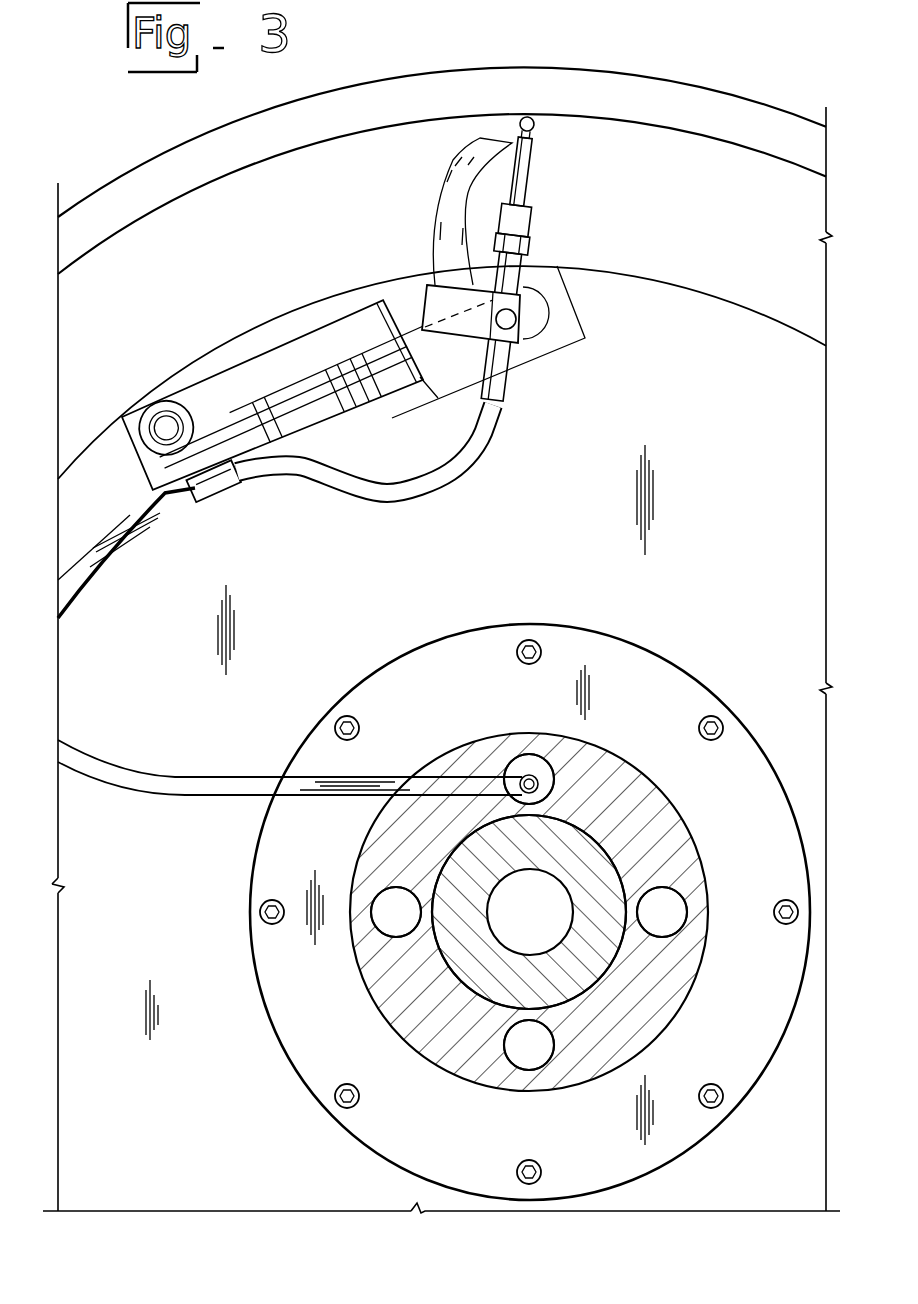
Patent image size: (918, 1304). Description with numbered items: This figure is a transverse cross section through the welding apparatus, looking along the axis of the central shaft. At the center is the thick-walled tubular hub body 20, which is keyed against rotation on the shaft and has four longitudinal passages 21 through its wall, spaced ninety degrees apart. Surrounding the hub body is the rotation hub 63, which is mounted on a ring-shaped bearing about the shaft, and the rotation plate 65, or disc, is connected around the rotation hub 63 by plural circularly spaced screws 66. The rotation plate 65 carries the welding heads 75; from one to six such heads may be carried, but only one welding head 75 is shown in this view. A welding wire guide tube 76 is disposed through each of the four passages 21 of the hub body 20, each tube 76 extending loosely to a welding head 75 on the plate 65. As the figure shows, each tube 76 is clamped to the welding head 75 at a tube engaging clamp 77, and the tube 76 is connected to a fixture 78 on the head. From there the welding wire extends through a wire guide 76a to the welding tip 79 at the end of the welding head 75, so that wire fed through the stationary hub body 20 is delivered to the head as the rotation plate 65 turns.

The tubular hub body 20 is at (657, 786).
The longitudinal passages 21 is at (523, 754).
The rotation hub 63 is at (632, 644).
The rotation plate 65 is at (728, 502).
The screws 66 is at (517, 653).
The welding head 75 is at (293, 290).
The welding wire guide tube 76 is at (175, 752).
The wire guide 76a is at (530, 264).
The tube engaging clamp 77 is at (217, 490).
The fixture 78 is at (468, 335).
The welding tip 79 is at (533, 172).